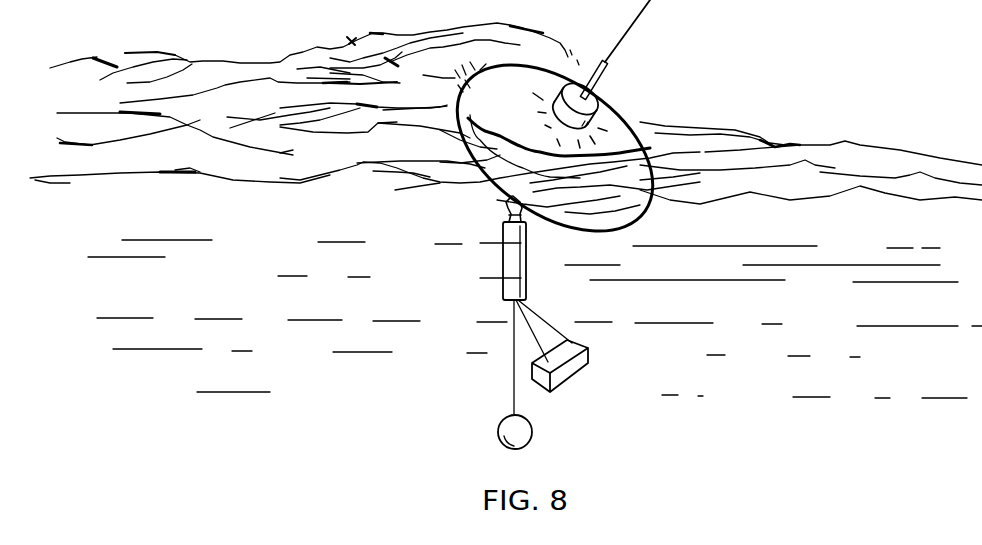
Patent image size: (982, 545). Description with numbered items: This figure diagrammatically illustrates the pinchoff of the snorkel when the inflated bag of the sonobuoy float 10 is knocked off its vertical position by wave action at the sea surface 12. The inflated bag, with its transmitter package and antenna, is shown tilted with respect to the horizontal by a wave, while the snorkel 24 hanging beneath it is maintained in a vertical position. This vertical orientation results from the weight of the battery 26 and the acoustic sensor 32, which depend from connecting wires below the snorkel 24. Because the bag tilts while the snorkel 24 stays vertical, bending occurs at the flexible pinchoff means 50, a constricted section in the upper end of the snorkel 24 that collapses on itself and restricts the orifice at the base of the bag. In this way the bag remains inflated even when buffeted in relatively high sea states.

The sonobuoy float 10 is at (627, 100).
The sea surface 12 is at (763, 127).
The snorkel 24 is at (502, 258).
The battery 26 is at (592, 347).
The acoustic sensor 32 is at (535, 428).
The pinchoff means 50 is at (500, 213).